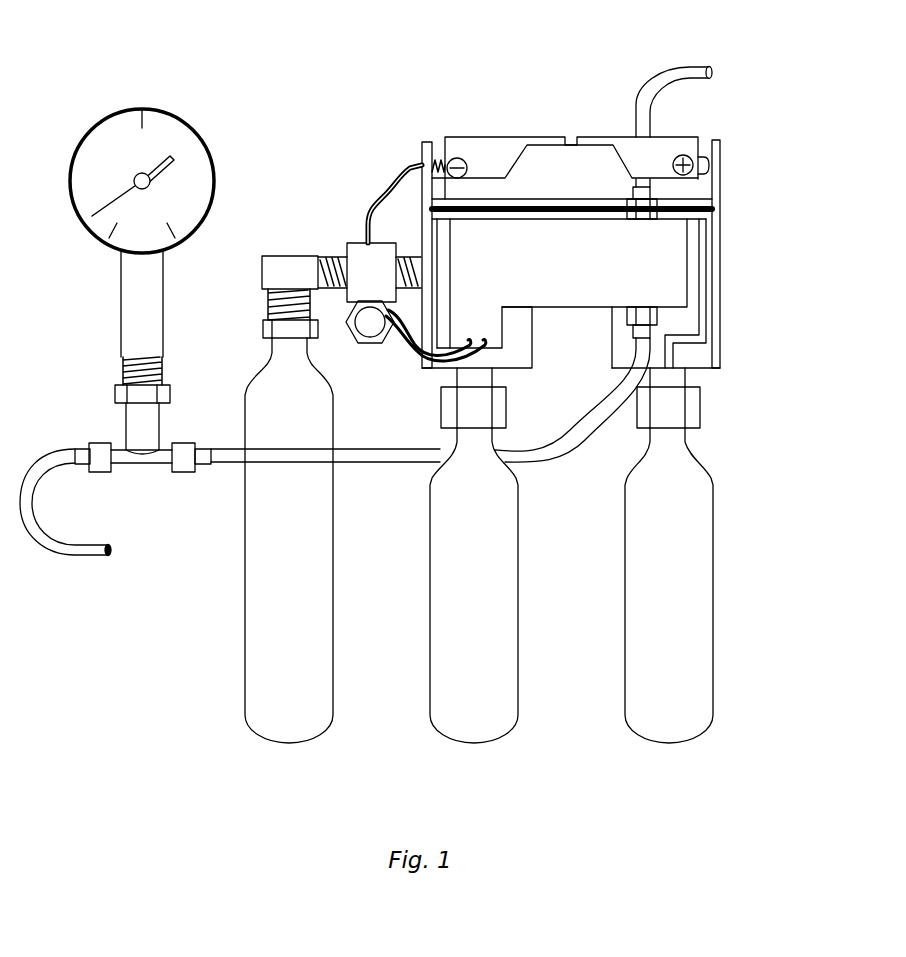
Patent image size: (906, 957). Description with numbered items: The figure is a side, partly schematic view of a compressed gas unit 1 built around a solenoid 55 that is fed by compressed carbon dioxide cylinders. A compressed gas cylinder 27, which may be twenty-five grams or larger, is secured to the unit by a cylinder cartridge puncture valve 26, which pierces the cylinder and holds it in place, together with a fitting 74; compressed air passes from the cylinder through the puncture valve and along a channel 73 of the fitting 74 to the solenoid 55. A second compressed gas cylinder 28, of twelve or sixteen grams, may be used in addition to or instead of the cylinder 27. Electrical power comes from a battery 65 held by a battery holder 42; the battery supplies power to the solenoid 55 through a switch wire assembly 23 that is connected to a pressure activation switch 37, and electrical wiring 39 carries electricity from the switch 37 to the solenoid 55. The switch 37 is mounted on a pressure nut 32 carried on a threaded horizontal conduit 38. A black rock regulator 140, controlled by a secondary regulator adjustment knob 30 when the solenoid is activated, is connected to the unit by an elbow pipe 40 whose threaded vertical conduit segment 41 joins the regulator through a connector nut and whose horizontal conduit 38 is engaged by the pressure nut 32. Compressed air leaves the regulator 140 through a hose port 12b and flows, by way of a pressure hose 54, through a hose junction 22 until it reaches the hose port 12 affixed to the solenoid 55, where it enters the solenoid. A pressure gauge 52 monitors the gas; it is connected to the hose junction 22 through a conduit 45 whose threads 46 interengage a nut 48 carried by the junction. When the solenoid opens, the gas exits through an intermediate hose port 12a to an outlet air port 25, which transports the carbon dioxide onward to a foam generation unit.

The compressed gas unit 1 is at (198, 30).
The pressure gauge 52 is at (210, 172).
The conduit 45 is at (120, 330).
The threads 46 is at (122, 370).
The nut 48 is at (116, 395).
The hose junction 22 is at (125, 425).
The pressure hose 54 is at (32, 500).
The hose port 12b is at (108, 556).
The elbow pipe 40 is at (262, 270).
The threaded horizontal conduit 38 is at (325, 256).
The pressure nut 32 is at (345, 250).
The threaded vertical conduit segment 41 is at (268, 305).
The secondary regulator adjustment knob 30 is at (320, 735).
The black rock regulator 140 is at (245, 666).
The pressure activation switch 37 is at (358, 343).
The electrical wiring 39 is at (402, 352).
The channel 73 is at (708, 262).
The fitting 74 is at (720, 350).
The battery 65 is at (503, 137).
The battery holder 42 is at (722, 160).
The switch wire assembly 23 is at (395, 182).
The outlet air port 25 is at (700, 67).
The intermediate hose port 12a is at (655, 207).
The solenoid 55 is at (688, 238).
The hose port 12 is at (625, 318).
The second compressed gas cylinder 28 is at (520, 660).
The compressed gas cylinder 27 is at (713, 570).
The cylinder cartridge puncture valve 26 is at (700, 408).